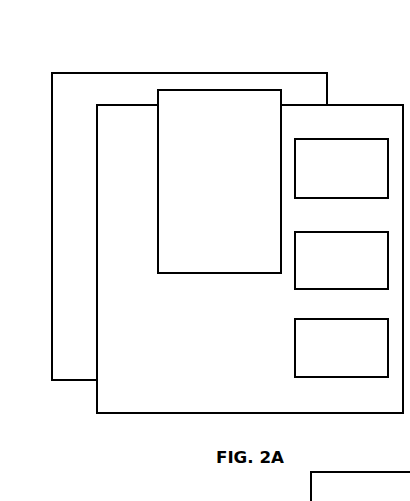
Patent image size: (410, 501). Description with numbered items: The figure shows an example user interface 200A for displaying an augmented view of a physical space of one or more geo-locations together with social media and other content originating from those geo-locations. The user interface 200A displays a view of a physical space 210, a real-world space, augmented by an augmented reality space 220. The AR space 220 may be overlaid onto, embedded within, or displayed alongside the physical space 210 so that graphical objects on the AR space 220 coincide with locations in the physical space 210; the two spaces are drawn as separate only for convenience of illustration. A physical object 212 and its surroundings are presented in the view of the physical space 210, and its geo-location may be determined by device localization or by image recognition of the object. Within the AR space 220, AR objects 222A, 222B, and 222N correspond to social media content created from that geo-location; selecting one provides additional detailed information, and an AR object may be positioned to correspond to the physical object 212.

The user interface 200A is at (67, 44).
The physical space 210 is at (237, 73).
The augmented reality space 220 is at (334, 105).
The physical object 212 is at (219, 181).
The AR object 222A is at (341, 168).
The AR object 222B is at (341, 260).
The AR object 222N is at (341, 348).